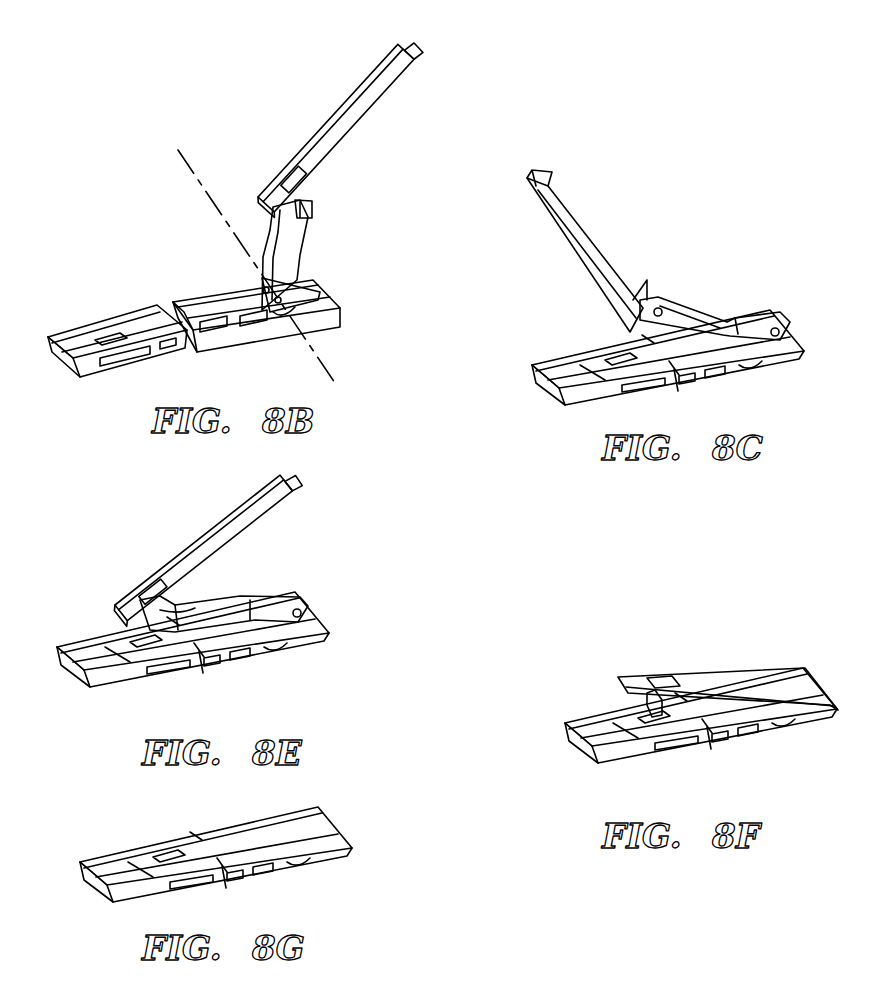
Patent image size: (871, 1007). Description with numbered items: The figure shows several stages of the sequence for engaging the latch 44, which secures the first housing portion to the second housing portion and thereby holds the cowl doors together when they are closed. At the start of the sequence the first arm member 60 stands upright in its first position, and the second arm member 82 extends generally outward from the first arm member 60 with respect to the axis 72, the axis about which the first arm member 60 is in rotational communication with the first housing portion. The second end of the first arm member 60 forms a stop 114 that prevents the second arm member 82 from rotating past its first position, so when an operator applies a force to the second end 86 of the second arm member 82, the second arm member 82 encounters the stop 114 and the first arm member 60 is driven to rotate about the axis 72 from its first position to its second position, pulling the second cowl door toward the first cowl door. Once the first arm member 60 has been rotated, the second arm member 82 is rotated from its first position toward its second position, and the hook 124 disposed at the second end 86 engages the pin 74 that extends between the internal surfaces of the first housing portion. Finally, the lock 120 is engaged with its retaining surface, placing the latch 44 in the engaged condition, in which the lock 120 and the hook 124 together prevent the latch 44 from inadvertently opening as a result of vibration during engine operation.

In FIG. 8B, the latch 44 is at (280, 212).
In FIG. 8C, the latch 44 is at (665, 259).
In FIG. 8E, the latch 44 is at (231, 592).
In FIG. 8F, the latch 44 is at (676, 657).
In FIG. 8G, the latch 44 is at (269, 822).
In FIG. 8B, the second arm member 82 is at (383, 67).
In FIG. 8C, the second arm member 82 is at (580, 232).
In FIG. 8E, the second arm member 82 is at (237, 537).
In FIG. 8F, the second arm member 82 is at (725, 693).
In FIG. 8B, the second end 86 is at (423, 48).
In FIG. 8B, the axis 72 is at (187, 172).
In FIG. 8B, the stop 114 is at (310, 216).
In FIG. 8B, the first arm member 60 is at (300, 248).
In FIG. 8C, the first arm member 60 is at (700, 323).
In FIG. 8E, the first arm member 60 is at (212, 622).
In FIG. 8E, the hook 124 is at (297, 500).
In FIG. 8E, the pin 74 is at (300, 612).
In FIG. 8F, the lock 120 is at (642, 715).